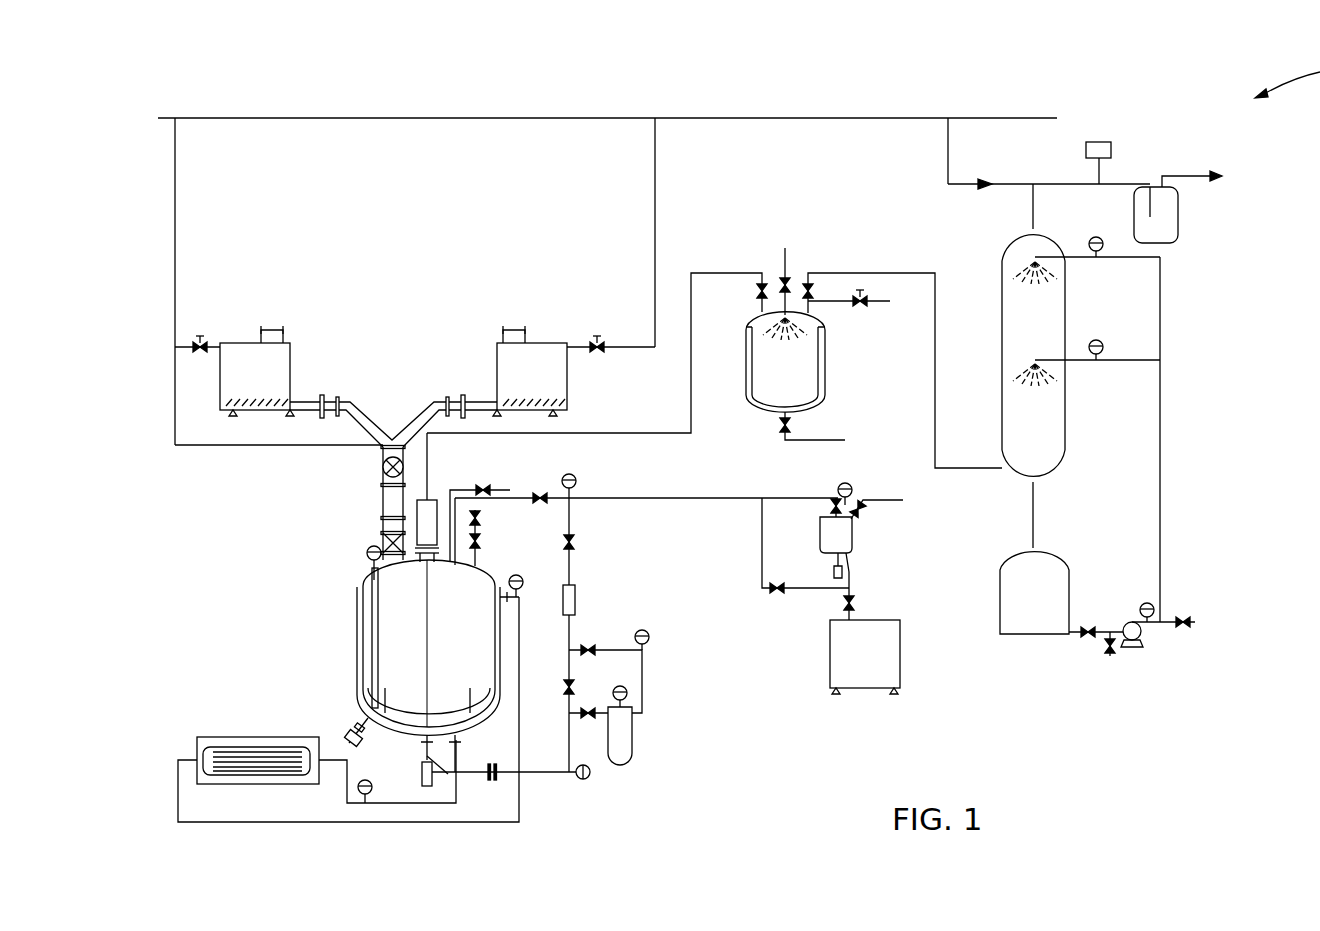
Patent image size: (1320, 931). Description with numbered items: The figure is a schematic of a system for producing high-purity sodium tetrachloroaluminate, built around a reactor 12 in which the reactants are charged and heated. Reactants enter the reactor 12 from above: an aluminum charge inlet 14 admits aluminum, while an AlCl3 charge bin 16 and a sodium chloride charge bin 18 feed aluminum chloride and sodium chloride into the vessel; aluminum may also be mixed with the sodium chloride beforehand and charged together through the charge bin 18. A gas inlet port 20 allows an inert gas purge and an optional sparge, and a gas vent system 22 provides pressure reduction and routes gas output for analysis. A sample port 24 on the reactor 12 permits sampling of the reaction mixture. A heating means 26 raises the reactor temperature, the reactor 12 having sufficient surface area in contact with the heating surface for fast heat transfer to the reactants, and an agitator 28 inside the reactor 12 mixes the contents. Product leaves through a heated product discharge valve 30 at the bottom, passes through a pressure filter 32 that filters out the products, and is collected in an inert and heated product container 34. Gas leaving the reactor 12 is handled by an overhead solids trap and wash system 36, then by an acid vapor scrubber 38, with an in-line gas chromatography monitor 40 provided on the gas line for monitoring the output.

The reactor 12 is at (471, 616).
The aluminum charge inlet 14 is at (479, 525).
The AlCl3 charge bin 16 is at (240, 343).
The sodium chloride charge bin 18 is at (540, 343).
The gas inlet port 20 is at (490, 487).
The gas vent system 22 is at (612, 430).
The sample port 24 is at (360, 746).
The heating means 26 is at (240, 737).
The agitator 28 is at (428, 676).
The heated product discharge valve 30 is at (440, 775).
The pressure filter 32 is at (633, 727).
The product container 34 is at (880, 620).
The overhead solids trap and wash system 36 is at (826, 356).
The acid vapor scrubber 38 is at (1047, 432).
The in-line gas chromatography monitor 40 is at (1097, 142).